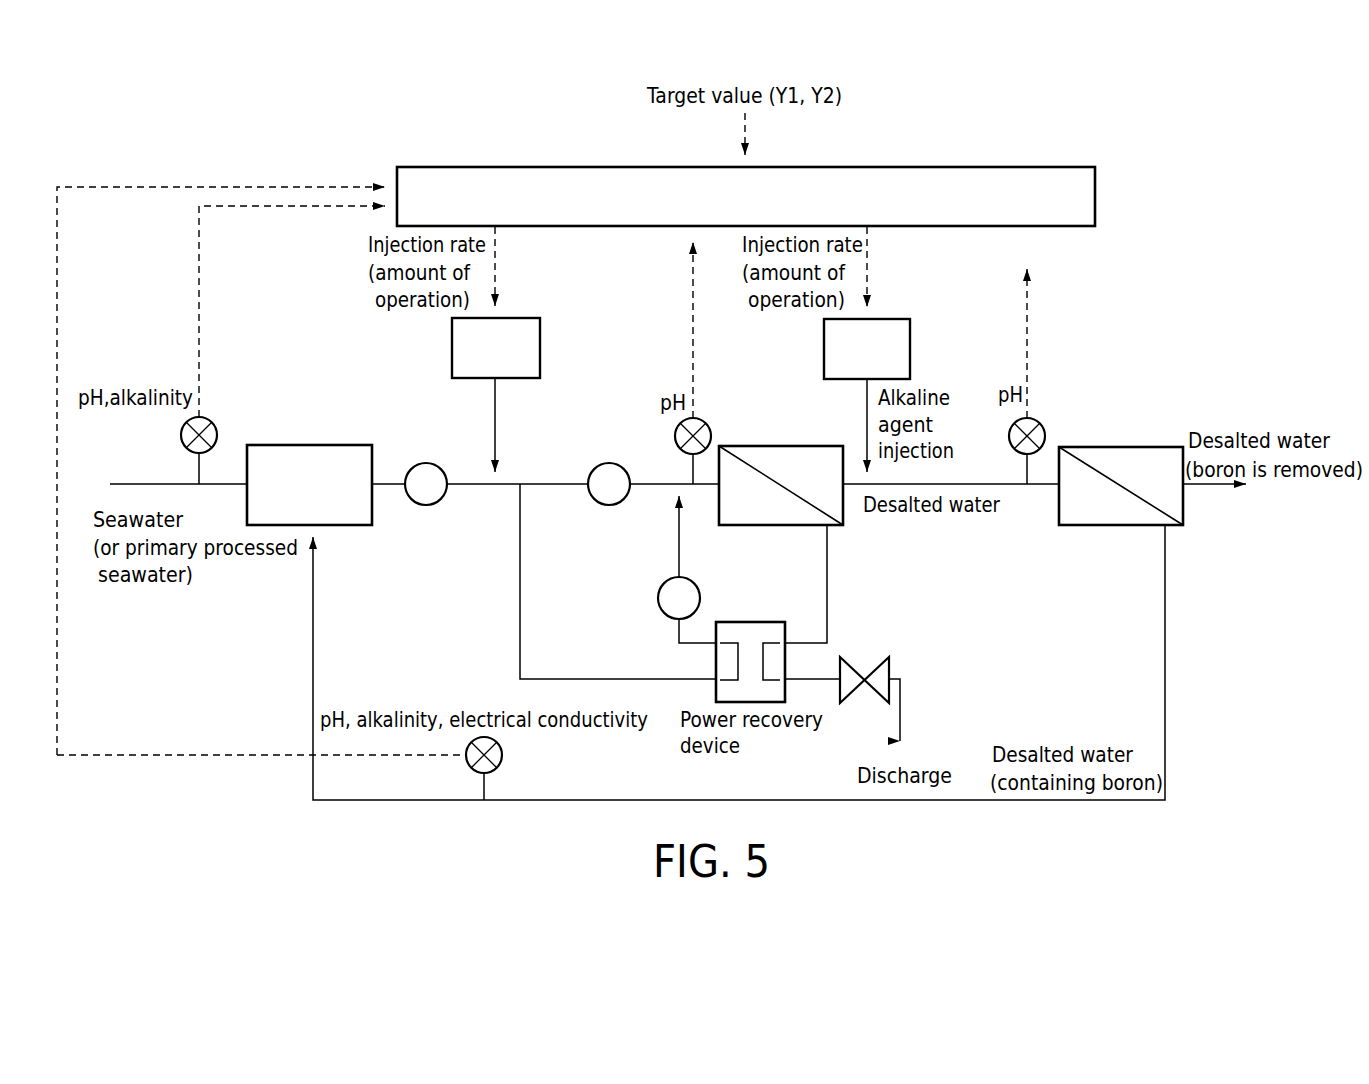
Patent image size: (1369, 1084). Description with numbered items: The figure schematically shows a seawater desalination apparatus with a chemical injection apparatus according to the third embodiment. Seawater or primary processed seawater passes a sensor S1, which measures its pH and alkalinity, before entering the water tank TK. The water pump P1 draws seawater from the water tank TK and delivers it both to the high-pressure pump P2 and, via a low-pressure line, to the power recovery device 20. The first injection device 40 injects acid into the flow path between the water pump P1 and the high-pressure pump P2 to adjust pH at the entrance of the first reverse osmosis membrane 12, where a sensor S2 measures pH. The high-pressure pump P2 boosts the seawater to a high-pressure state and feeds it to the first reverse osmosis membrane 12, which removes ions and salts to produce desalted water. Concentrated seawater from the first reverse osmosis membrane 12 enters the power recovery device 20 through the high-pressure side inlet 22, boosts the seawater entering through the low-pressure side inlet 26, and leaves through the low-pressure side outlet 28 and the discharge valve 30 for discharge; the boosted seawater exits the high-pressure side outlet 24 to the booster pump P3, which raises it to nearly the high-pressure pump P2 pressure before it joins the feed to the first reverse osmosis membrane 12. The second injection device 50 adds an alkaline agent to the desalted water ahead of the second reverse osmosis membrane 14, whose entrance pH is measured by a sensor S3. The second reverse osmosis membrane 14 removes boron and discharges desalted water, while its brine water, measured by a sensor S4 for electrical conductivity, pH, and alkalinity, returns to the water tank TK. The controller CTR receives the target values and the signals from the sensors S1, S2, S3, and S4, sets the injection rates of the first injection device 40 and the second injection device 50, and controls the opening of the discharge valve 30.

The controller CTR is at (1012, 168).
The first injection device 40 is at (512, 318).
The second injection device 50 is at (884, 319).
The water tank TK is at (320, 445).
The water pump P1 is at (426, 505).
The high-pressure pump P2 is at (609, 505).
The booster pump P3 is at (658, 600).
The sensor (third sensor) S1 is at (212, 418).
The sensor (first sensor) S2 is at (705, 418).
The sensor (second sensor) S3 is at (1040, 418).
The sensor S4 is at (502, 755).
The first reverse osmosis membrane 12 is at (760, 446).
The second reverse osmosis membrane 14 is at (1130, 447).
The power recovery device 20 is at (745, 625).
The high-pressure side inlet 22 is at (775, 643).
The high-pressure side outlet 24 is at (722, 643).
The low-pressure side inlet 26 is at (718, 673).
The low-pressure side outlet 28 is at (783, 672).
The brine flow amount adjustment valve (discharge valve) 30 is at (865, 690).